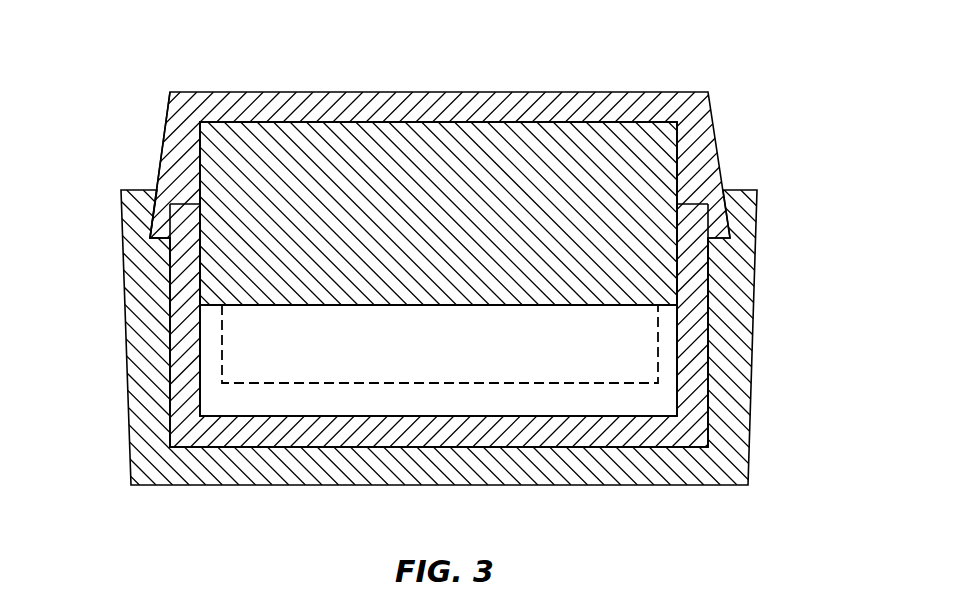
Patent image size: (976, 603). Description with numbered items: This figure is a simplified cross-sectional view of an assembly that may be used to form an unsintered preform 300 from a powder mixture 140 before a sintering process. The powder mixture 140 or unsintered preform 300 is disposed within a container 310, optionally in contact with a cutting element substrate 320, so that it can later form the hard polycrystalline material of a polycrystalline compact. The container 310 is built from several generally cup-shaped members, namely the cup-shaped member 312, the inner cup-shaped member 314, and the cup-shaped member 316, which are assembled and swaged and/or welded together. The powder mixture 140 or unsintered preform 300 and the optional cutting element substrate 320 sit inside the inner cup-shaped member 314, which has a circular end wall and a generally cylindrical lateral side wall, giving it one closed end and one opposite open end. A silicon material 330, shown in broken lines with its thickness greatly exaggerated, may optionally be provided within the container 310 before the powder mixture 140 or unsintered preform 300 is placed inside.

The unsintered preform 300 is at (412, 158).
The container 310 is at (163, 75).
The cup-shaped member 312 is at (145, 312).
The inner cup-shaped member 314 is at (329, 433).
The cup-shaped member 316 is at (183, 149).
The cutting element substrate 320 is at (653, 160).
The silicon material 330 is at (568, 397).
The powder mixture 140 is at (613, 330).